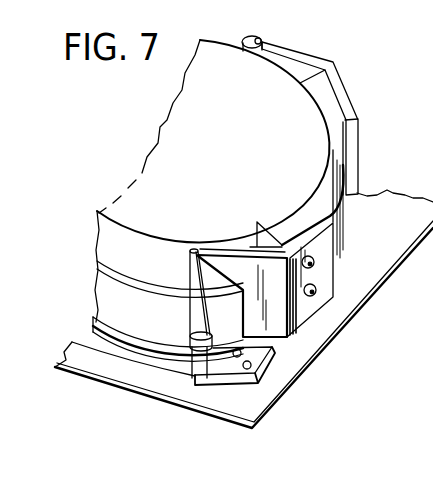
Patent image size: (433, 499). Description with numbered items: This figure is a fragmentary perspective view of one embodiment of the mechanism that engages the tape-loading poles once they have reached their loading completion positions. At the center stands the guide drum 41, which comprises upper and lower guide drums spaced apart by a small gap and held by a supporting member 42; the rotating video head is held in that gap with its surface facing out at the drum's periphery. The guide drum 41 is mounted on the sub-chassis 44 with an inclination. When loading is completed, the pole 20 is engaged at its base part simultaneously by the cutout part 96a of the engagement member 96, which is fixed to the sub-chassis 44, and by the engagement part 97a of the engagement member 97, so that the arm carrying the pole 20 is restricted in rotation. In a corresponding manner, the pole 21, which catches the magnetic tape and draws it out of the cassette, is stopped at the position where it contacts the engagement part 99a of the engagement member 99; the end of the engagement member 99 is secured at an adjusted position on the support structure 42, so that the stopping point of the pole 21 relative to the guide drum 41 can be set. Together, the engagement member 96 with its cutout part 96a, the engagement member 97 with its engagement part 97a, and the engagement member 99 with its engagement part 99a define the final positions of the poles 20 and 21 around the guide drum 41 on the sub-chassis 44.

The pole 20 is at (190, 311).
The pole 21 is at (243, 39).
The guide drum 41 is at (143, 171).
The supporting member 42 is at (321, 131).
The sub-chassis 44 is at (337, 317).
The engagement member 96 is at (268, 357).
The cutout part 96a is at (186, 364).
The engagement member 97 is at (323, 281).
The engagement part 97a is at (200, 248).
The engagement member 99 is at (340, 77).
The engagement part 99a is at (262, 38).